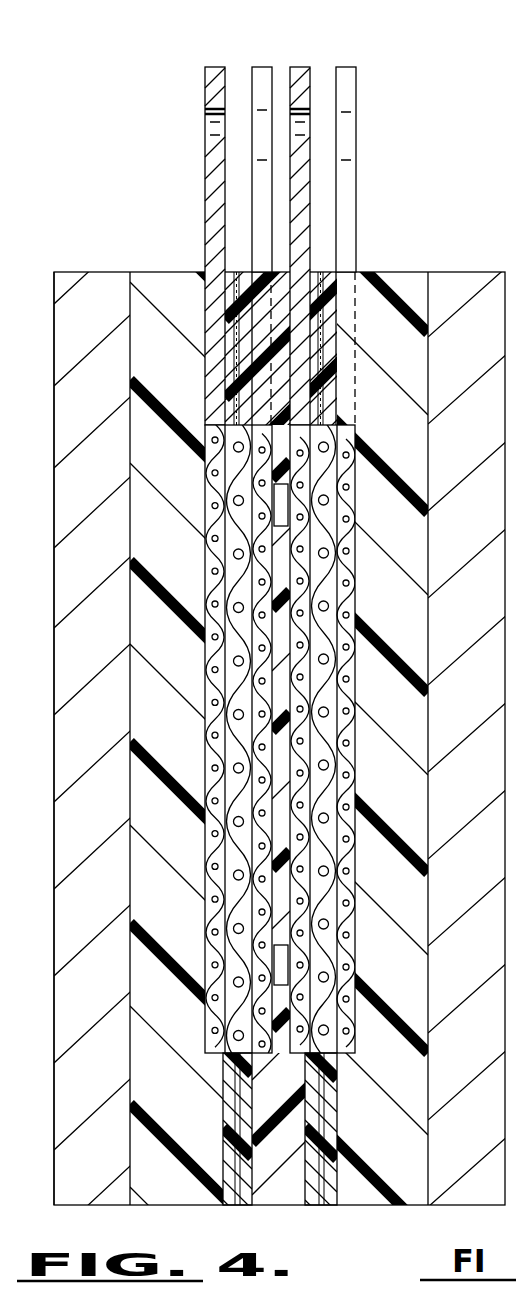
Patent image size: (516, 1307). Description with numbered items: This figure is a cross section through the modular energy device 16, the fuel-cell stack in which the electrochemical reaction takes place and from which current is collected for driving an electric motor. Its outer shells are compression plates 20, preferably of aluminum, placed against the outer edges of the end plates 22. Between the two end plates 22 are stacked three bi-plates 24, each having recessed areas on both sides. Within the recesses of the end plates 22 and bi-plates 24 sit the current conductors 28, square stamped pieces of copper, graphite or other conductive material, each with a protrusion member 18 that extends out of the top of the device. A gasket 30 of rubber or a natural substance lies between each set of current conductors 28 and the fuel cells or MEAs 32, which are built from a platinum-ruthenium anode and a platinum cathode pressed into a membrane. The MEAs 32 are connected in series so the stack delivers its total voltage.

The modular energy device 16 is at (455, 121).
The protrusion member 18 is at (290, 67).
The compression plate 20 is at (68, 272).
The end plate 22 is at (152, 272).
The bi-plate 24 is at (290, 1127).
The current conductor 28 is at (257, 550).
The gasket 30 is at (230, 388).
The fuel cell or MEA (membrane electrode assembly) 32 is at (237, 697).